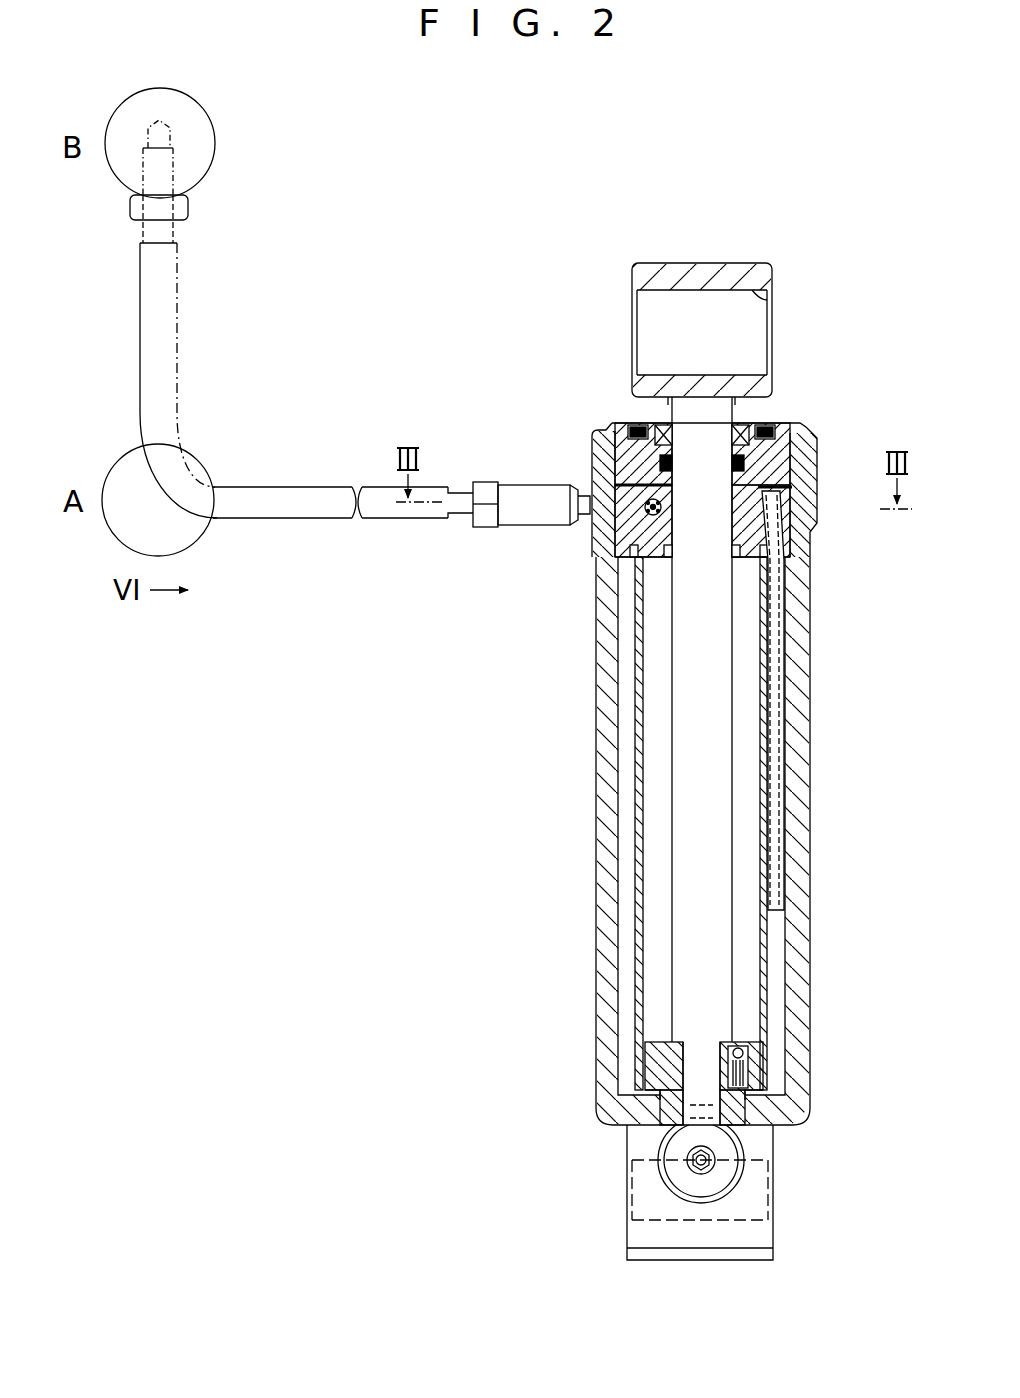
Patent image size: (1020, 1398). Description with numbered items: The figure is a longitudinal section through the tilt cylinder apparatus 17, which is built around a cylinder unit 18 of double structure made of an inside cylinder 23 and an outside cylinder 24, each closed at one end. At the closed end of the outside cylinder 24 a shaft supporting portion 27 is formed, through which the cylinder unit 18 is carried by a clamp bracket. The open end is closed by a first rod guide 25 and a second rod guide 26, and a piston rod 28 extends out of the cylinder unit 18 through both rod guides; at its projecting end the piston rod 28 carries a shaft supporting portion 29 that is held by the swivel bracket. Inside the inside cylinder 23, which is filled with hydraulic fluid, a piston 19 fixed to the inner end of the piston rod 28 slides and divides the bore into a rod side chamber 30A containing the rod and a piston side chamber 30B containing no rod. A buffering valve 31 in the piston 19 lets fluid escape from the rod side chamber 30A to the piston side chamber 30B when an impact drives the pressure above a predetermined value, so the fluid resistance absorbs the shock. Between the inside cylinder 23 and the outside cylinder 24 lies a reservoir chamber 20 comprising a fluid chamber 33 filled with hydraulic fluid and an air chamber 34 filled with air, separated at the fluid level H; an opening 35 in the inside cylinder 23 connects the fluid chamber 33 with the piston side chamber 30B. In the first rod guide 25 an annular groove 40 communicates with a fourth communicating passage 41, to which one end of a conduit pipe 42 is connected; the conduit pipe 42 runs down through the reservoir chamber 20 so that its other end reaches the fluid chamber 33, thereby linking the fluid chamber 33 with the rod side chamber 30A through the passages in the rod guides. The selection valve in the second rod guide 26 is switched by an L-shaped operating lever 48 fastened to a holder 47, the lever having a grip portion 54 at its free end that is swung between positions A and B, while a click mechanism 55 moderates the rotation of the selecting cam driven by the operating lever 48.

The tilt cylinder apparatus 17 is at (526, 332).
The cylinder unit 18 is at (577, 708).
The piston 19 is at (756, 1044).
The reservoir chamber 20 is at (648, 841).
The inside cylinder 23 is at (778, 882).
The outside cylinder 24 is at (780, 762).
The first rod guide 25 is at (612, 440).
The second rod guide 26 is at (612, 540).
The shaft supporting portion 27 is at (775, 1215).
The piston rod 28 is at (718, 832).
The shaft supporting portion 29 is at (770, 300).
The rod side chamber 30A is at (750, 680).
The piston side chamber 30B is at (648, 1108).
The buffering valve 31 is at (744, 1066).
The fluid chamber 33 is at (625, 885).
The air chamber 34 is at (630, 653).
The opening 35 is at (770, 1095).
The annular groove 40 is at (792, 475).
The fourth communicating passage 41 is at (806, 504).
The conduit pipe 42 is at (793, 600).
The holder 47 is at (525, 482).
The operating lever 48 is at (178, 278).
The grip portion 54 is at (214, 148).
The click mechanism 55 is at (640, 510).
The fluid level H is at (630, 750).